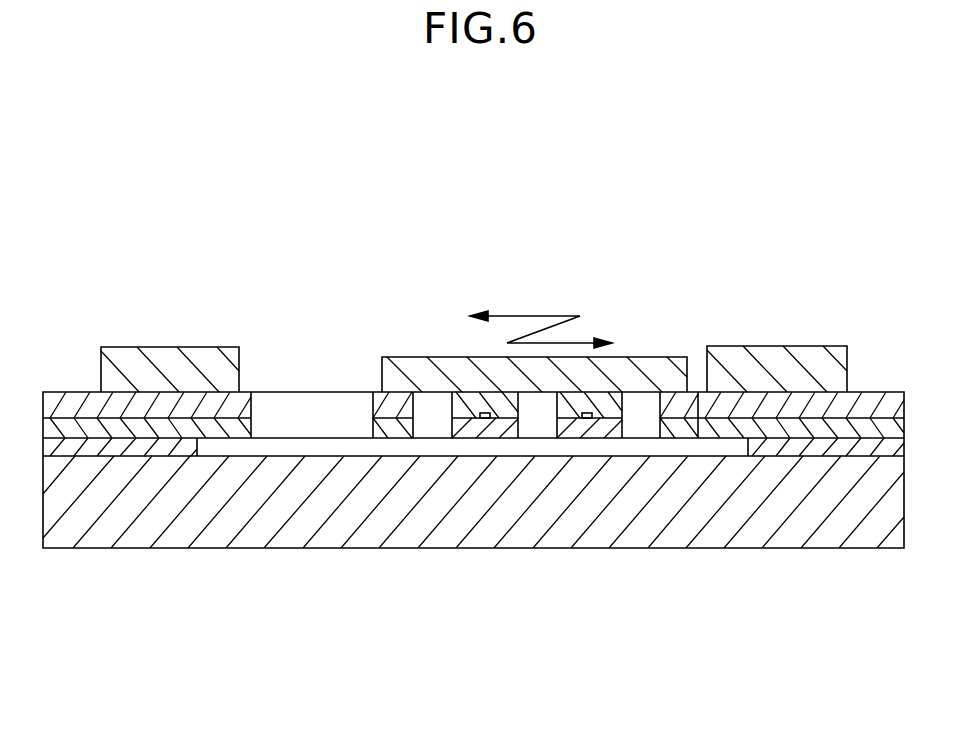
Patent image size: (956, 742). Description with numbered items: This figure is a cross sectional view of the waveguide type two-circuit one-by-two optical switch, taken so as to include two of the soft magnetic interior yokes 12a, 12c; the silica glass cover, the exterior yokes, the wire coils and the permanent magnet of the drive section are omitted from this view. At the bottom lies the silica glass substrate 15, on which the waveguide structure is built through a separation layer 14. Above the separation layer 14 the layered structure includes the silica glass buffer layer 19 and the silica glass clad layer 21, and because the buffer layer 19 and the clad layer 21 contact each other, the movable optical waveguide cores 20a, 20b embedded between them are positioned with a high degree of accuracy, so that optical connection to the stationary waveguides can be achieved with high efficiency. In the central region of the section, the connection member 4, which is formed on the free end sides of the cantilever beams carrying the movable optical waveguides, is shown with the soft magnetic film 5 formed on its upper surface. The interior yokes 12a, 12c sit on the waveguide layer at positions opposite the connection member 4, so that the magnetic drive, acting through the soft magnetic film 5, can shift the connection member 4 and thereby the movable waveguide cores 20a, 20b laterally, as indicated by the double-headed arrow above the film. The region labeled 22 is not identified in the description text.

The connection member 4 is at (401, 438).
The soft magnetic film 5 is at (412, 370).
The soft magnetic interior yoke 12a is at (735, 365).
The soft magnetic interior yoke 12c is at (161, 360).
The separation layer 14 is at (793, 443).
The silica glass substrate 15 is at (110, 517).
The silica glass buffer layer 19 is at (863, 430).
The movable optical waveguide core 20a is at (598, 418).
The movable optical waveguide core 20b is at (493, 418).
The silica glass clad layer 21 is at (792, 408).
The cavity / channel 22 is at (433, 410).